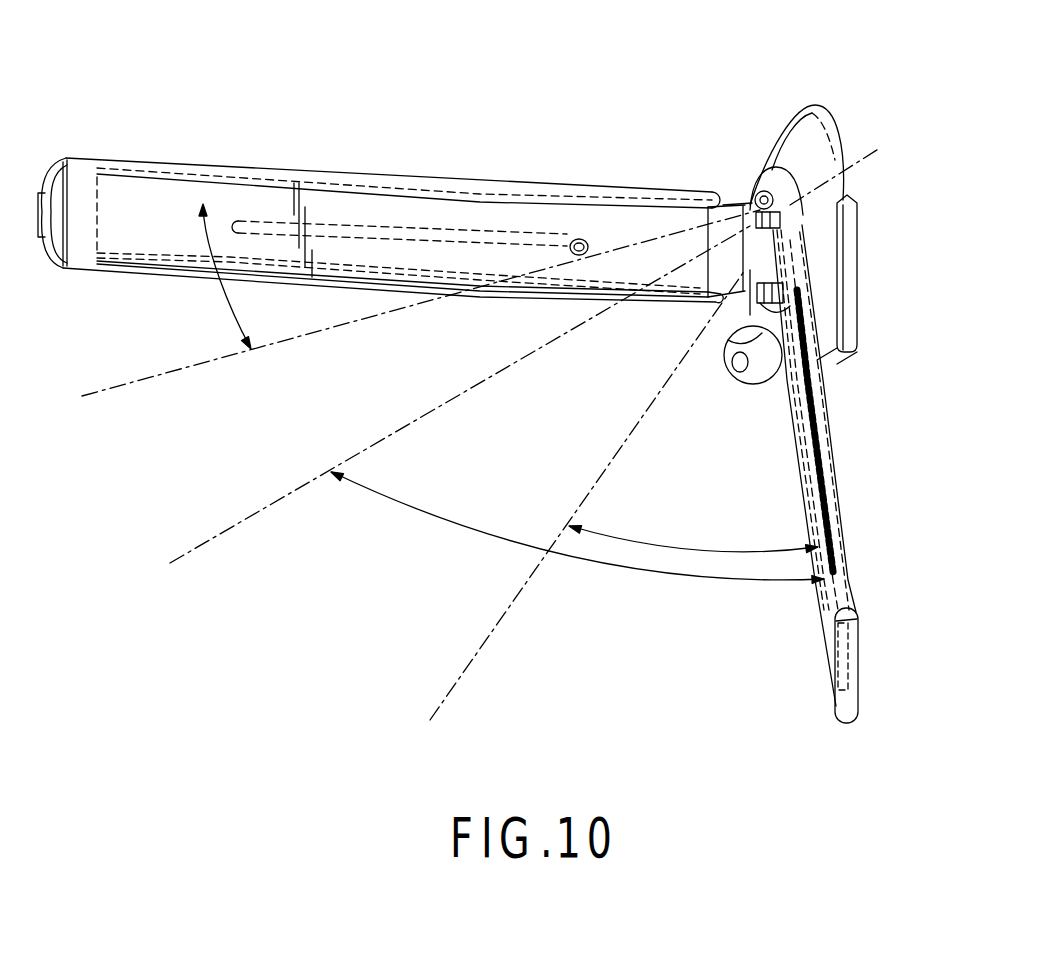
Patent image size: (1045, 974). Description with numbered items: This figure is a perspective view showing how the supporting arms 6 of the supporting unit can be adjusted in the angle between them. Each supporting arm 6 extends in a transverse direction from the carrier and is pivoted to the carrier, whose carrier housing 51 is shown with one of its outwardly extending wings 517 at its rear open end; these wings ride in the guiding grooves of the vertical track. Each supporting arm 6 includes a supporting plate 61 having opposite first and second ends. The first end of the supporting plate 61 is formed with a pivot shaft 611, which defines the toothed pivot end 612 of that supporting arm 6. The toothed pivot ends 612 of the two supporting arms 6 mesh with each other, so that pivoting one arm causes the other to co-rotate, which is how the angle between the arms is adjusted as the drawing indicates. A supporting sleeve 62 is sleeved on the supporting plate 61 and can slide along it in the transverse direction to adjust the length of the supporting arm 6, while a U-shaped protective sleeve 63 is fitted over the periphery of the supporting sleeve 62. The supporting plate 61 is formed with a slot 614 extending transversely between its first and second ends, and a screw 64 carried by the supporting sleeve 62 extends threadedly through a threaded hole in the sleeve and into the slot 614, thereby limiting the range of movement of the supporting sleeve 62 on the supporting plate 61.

The supporting arm 6 is at (447, 157).
The supporting sleeve 62 is at (160, 230).
The U-shaped protective sleeve 63 is at (270, 172).
The slot 614 is at (360, 226).
The screw 64 is at (580, 239).
The carrier housing 51 is at (797, 137).
The supporting plate 61 is at (750, 207).
The pivot shaft 611 is at (800, 232).
The toothed pivot end 612 is at (770, 224).
The wing 517 is at (852, 322).